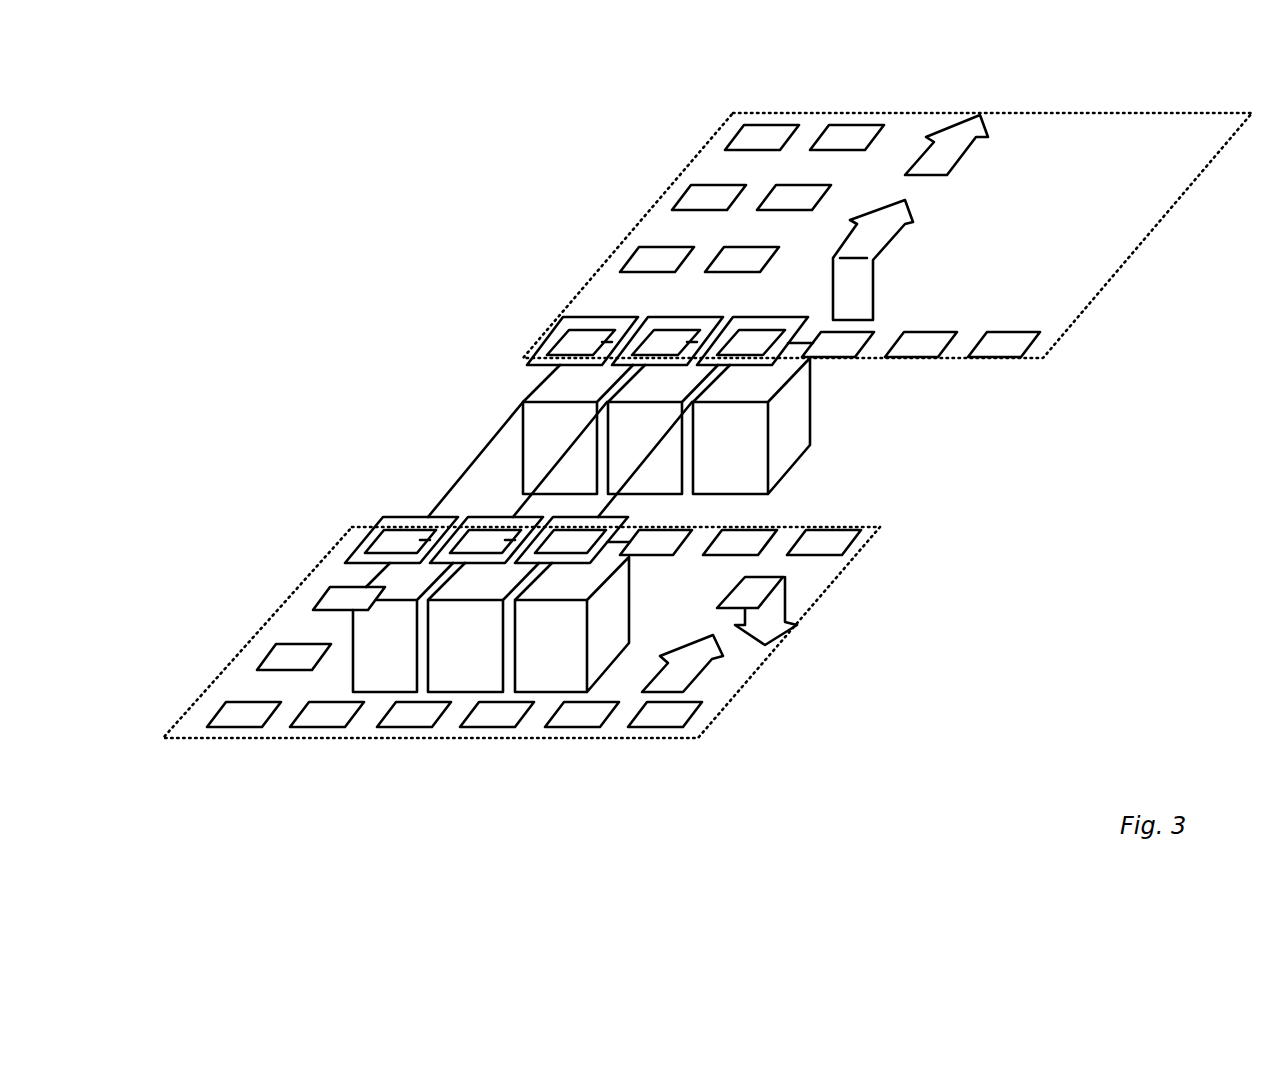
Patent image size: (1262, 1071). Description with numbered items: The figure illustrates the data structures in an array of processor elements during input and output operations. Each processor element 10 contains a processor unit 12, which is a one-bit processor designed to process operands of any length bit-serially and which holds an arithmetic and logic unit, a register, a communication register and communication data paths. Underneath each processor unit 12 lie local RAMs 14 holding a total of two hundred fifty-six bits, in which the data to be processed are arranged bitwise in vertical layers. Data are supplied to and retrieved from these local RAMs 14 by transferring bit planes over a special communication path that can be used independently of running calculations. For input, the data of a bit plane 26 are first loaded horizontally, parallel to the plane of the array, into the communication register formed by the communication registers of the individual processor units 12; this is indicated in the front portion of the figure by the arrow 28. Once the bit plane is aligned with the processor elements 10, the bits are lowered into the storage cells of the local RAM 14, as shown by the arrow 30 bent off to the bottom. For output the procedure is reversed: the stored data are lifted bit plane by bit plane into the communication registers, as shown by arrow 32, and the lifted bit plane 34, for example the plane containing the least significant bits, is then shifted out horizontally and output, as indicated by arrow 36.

The processor element 10 is at (565, 653).
The processor unit 12 is at (705, 322).
The local RAM 14 is at (370, 663).
The bit plane 26 is at (213, 683).
The arrow 28 is at (685, 668).
The arrow 30 is at (777, 608).
The arrow 32 is at (863, 297).
The lifted bit plane 34 is at (583, 308).
The arrow 36 is at (932, 153).